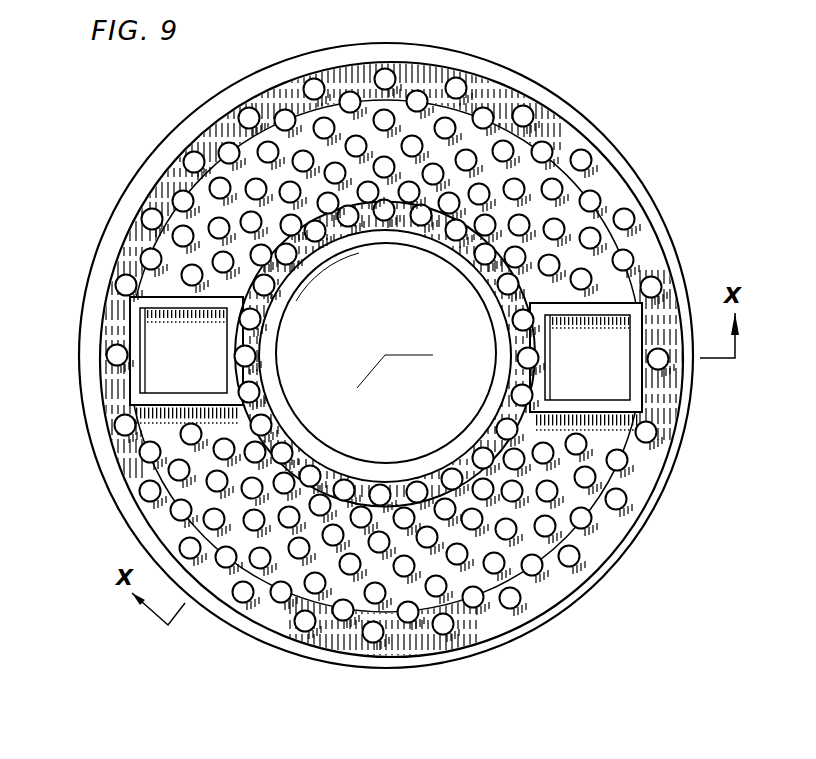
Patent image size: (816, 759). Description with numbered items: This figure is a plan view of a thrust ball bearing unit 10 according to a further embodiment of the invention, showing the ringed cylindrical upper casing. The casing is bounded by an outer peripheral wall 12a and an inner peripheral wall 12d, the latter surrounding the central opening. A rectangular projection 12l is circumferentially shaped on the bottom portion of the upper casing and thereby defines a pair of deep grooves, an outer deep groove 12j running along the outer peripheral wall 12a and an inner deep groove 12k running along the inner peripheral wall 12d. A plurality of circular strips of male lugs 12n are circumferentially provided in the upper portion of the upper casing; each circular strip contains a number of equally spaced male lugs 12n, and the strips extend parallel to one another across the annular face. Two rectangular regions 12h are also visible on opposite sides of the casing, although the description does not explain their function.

The distributor plate 10 is at (641, 160).
The outer peripheral wall 12a is at (148, 175).
The inner peripheral wall 12d is at (350, 256).
The rectangular recess 12h is at (158, 381).
The deep groove 12j is at (327, 631).
The deep groove 12k is at (364, 489).
The rectangular projection 12l is at (533, 134).
The male lugs 12n is at (316, 121).